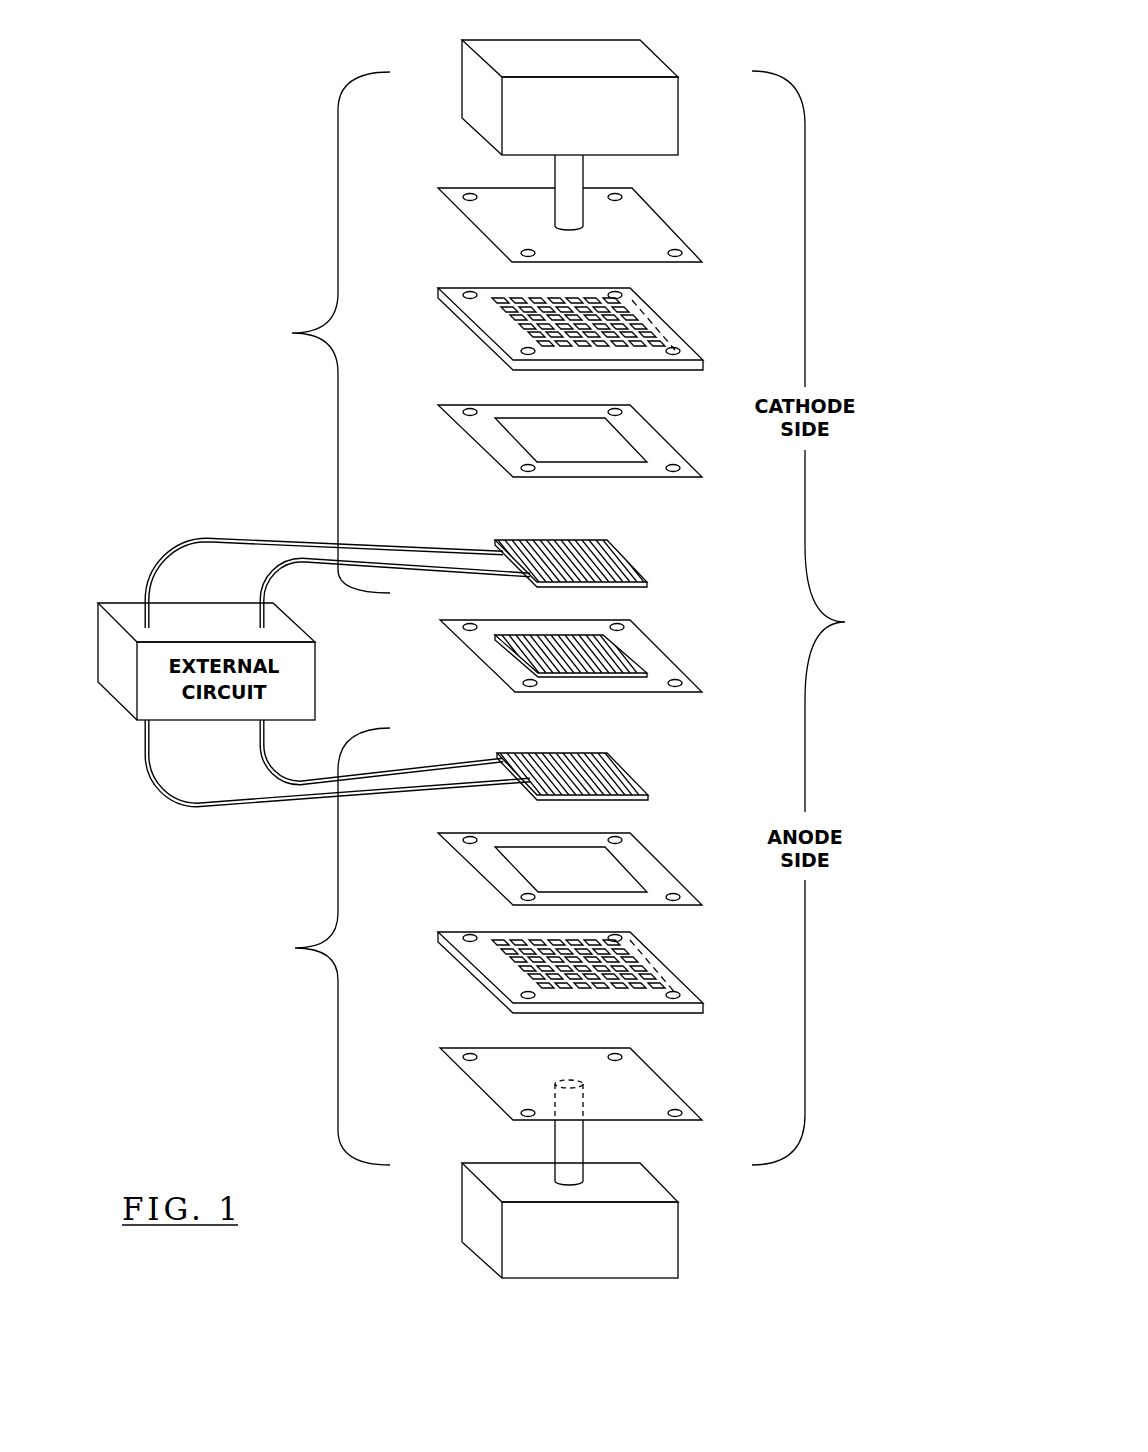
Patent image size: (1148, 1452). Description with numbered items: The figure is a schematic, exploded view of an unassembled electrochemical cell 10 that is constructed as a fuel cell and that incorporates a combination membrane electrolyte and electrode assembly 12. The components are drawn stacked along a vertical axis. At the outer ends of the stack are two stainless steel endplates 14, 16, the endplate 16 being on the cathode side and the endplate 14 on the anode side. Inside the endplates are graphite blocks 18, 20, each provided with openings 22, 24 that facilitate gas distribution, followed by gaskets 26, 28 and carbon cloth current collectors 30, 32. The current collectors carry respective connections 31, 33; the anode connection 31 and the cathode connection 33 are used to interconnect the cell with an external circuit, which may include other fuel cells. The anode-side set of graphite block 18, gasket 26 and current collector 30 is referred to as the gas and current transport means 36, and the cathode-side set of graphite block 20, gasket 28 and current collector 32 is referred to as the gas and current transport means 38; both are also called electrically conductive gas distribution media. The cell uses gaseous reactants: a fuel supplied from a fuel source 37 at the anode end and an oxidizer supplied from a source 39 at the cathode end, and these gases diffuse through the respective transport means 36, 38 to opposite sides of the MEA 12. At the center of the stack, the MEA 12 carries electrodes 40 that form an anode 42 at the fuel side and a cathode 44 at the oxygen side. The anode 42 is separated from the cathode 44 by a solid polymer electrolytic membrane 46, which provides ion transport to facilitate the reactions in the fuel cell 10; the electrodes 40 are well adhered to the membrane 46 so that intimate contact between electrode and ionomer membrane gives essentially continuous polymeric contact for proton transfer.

The electrochemical cell 10 is at (848, 622).
The membrane electrolyte and electrode assembly 12 is at (657, 643).
The endplate 14 is at (640, 1085).
The endplate 16 is at (650, 231).
The graphite block 18 is at (690, 987).
The graphite block 20 is at (658, 332).
The openings 22 is at (607, 970).
The openings 24 is at (645, 315).
The gasket 26 is at (643, 865).
The gasket 28 is at (653, 448).
The carbon cloth current collector 30 is at (612, 778).
The anode connection 31 is at (463, 783).
The carbon cloth current collector 32 is at (607, 562).
The cathode connection 33 is at (315, 558).
The gas and current transport means 36 is at (295, 948).
The fuel source 37 is at (638, 1182).
The gas and current transport means 38 is at (292, 333).
The oxidizer source 39 is at (663, 128).
The electrodes 40 is at (593, 659).
The anode 42 is at (597, 680).
The cathode 44 is at (587, 650).
The solid polymer electrolytic membrane 46 is at (688, 673).